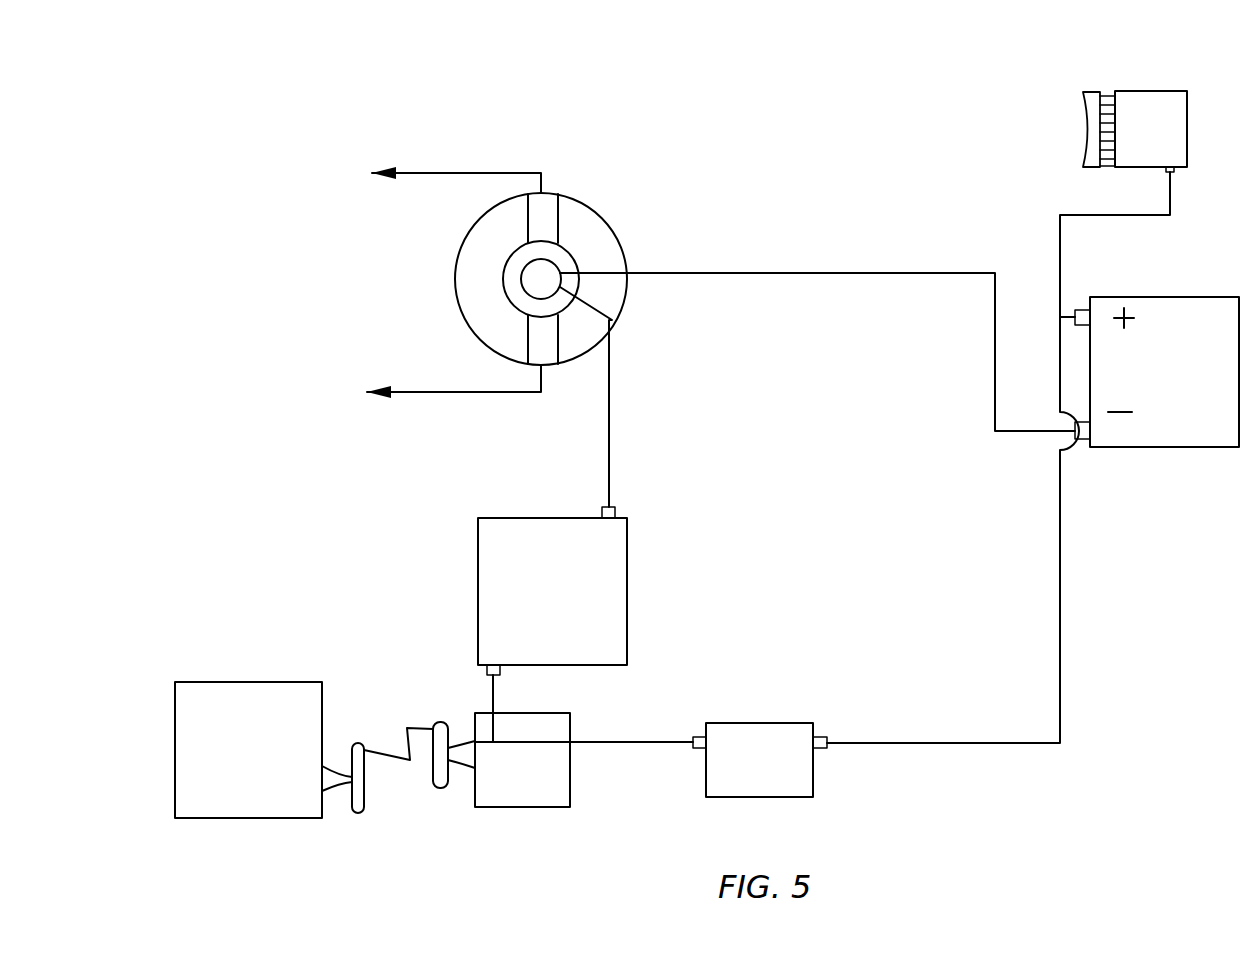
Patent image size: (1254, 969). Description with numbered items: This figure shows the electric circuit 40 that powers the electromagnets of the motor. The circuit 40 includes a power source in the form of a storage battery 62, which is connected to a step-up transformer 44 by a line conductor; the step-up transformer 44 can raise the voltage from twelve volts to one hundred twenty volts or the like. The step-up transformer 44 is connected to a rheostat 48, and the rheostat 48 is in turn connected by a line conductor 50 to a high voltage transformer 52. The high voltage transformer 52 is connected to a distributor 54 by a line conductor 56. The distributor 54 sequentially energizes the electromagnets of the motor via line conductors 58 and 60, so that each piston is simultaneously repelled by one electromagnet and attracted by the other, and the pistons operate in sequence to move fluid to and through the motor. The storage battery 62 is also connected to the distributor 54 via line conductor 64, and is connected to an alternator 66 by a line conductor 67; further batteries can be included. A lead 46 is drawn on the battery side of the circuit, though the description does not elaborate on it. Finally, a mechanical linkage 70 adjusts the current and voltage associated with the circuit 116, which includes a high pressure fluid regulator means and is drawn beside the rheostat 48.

The electric circuit 40 is at (750, 603).
The step-up transformer 44 is at (752, 735).
The battery lead 46 is at (1080, 598).
The rheostat 48 is at (565, 821).
The line conductor 50 is at (496, 695).
The high voltage transformer 52 is at (627, 566).
The distributor 54 is at (612, 204).
The line conductor 56 is at (612, 437).
The line conductor 58 is at (445, 172).
The line conductor 60 is at (410, 394).
The storage battery 62 is at (1109, 433).
The line conductor 64 is at (817, 352).
The alternator 66 is at (1146, 105).
The line conductor 67 is at (1062, 254).
The mechanical linkage 70 is at (400, 800).
The circuit 116 is at (240, 803).